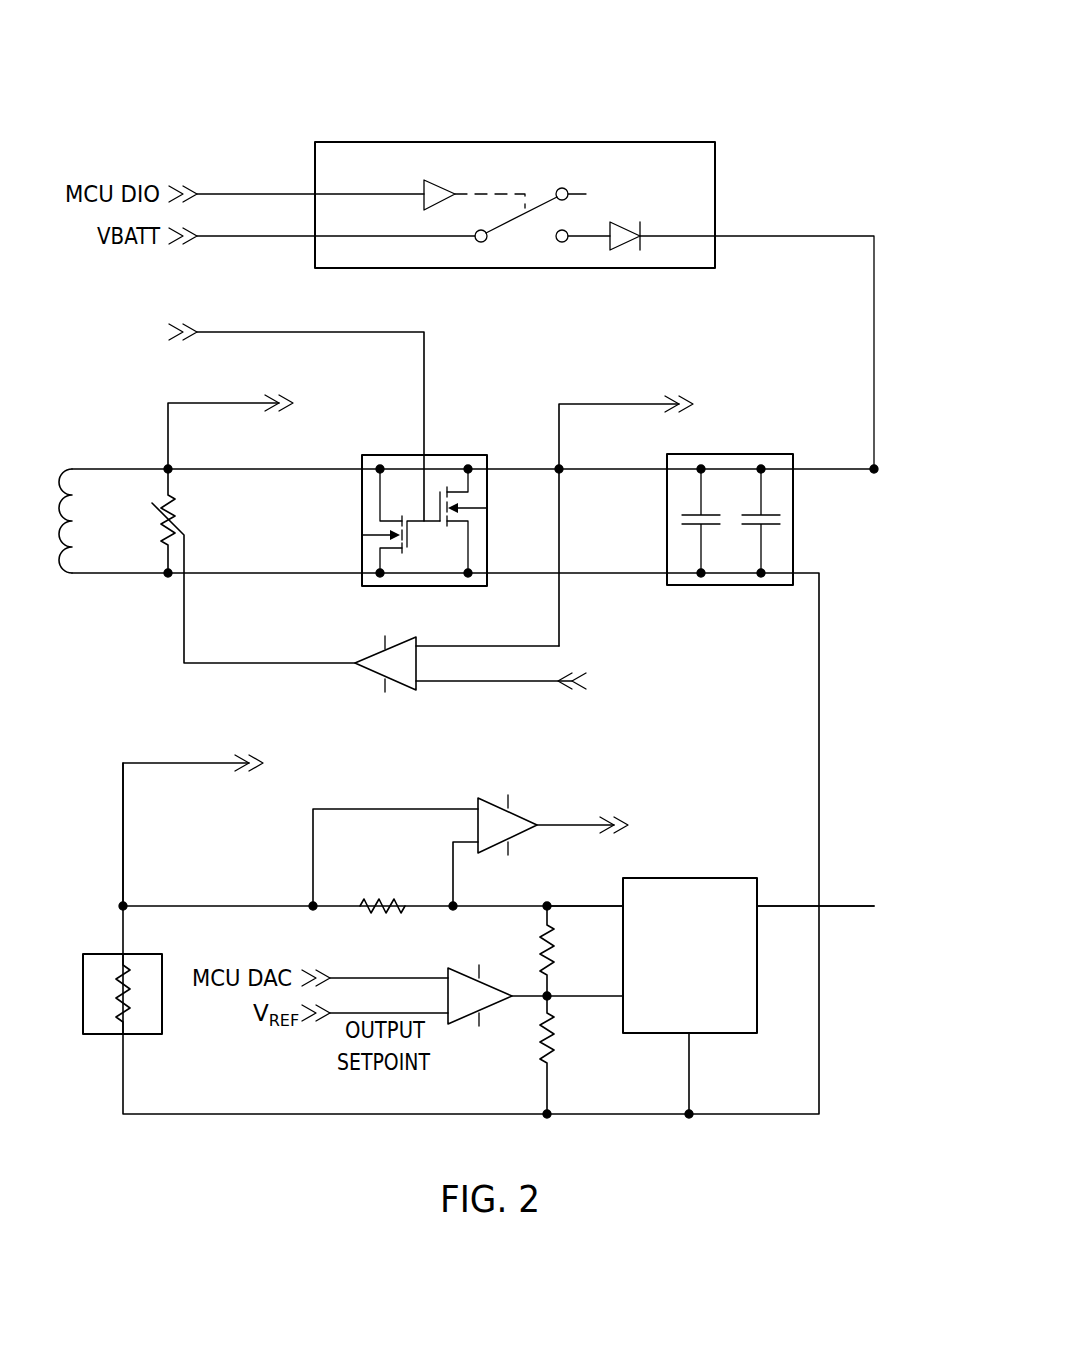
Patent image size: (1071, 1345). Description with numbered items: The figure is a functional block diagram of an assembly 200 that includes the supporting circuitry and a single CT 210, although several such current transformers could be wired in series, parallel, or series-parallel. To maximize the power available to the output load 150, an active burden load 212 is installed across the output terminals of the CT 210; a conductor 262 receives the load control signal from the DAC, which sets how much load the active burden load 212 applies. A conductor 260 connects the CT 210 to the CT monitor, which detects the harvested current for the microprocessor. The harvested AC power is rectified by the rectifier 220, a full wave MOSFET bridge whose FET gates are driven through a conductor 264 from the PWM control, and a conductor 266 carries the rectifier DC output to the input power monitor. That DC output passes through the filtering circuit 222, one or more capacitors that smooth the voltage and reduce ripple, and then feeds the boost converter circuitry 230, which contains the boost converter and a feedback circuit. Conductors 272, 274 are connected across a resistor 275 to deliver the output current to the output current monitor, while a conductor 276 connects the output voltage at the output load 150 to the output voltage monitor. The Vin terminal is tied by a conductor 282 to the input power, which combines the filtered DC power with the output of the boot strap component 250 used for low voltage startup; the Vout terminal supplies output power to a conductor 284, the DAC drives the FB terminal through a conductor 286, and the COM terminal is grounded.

The assembly 200 is at (232, 63).
The boot strap component 250 is at (546, 142).
The conductor 260 is at (168, 432).
The conductor 264 is at (424, 388).
The conductor 266 is at (559, 421).
The CT 210 is at (64, 585).
The active burden load 212 is at (163, 534).
The rectifier 220 is at (458, 587).
The filtering circuit 222 is at (722, 588).
The conductor 262 is at (184, 641).
The conductor 276 is at (123, 813).
The conductor 272 is at (478, 808).
The conductor 274 is at (462, 846).
The resistor 275 is at (385, 915).
The conductor 284 is at (584, 905).
The conductor 282 is at (780, 905).
The boost converter circuitry 230 is at (828, 976).
The conductor 286 is at (592, 1000).
The output load 150 is at (108, 1036).